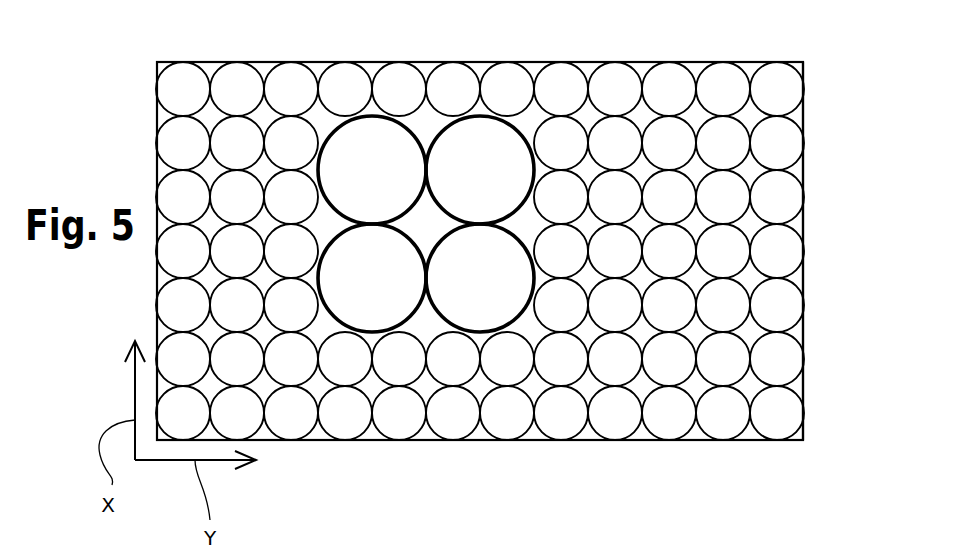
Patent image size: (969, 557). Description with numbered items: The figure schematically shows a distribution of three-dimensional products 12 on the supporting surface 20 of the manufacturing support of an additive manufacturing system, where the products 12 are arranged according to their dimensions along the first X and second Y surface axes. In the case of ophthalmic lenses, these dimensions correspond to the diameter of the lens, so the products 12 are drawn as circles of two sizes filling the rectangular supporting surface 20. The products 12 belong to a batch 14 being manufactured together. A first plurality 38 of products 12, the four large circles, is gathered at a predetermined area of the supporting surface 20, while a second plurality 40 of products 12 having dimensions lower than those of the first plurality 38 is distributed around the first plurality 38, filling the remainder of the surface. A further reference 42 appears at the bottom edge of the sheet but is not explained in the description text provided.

The product 12 is at (375, 157).
The batch 14 is at (812, 393).
The supporting surface 20 is at (743, 440).
The first plurality of products 38 is at (540, 221).
The second plurality of products 40 is at (810, 225).
The element 42 is at (599, 553).